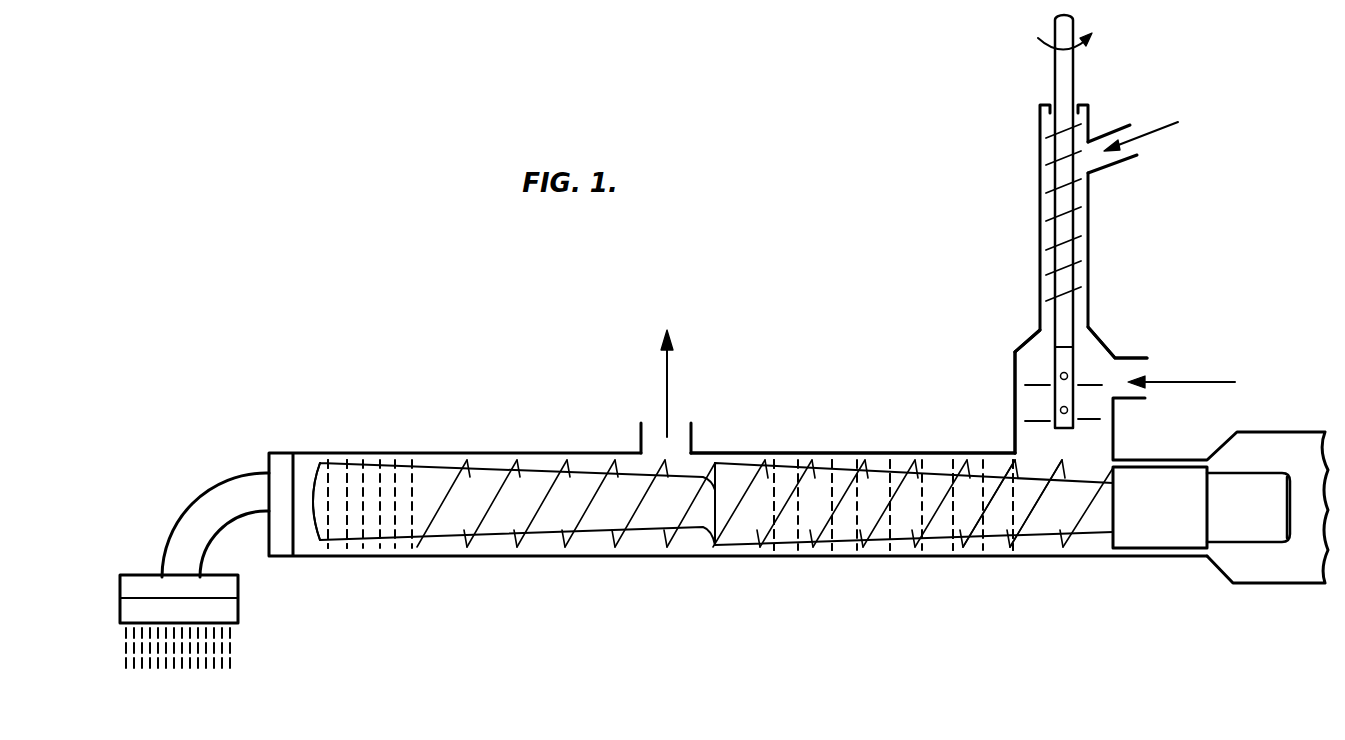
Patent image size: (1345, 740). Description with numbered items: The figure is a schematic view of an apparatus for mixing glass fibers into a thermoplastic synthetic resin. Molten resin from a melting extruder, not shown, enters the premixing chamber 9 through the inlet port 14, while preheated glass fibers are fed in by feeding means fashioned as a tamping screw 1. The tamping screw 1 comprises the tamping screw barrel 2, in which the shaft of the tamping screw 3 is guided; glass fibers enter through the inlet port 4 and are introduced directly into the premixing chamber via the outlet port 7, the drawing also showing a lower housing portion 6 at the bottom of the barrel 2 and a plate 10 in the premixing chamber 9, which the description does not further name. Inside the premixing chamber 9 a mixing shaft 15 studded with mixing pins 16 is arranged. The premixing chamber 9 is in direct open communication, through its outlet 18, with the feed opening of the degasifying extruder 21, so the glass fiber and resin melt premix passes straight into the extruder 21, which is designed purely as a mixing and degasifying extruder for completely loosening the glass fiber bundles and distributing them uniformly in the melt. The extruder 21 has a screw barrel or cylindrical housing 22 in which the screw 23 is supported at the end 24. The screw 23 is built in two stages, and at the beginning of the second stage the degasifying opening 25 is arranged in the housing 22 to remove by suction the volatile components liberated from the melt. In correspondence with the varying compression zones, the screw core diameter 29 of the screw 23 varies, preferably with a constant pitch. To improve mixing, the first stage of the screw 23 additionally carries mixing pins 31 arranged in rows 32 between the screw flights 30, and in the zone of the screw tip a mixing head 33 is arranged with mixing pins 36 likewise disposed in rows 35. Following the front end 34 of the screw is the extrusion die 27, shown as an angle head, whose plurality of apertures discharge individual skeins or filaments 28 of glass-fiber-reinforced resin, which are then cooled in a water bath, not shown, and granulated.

The tamping screw 1 is at (1083, 265).
The tamping screw barrel 2 is at (1040, 122).
The shaft of the tamping screw 3 is at (1072, 63).
The inlet port 4 is at (1103, 142).
The lower housing flange 6 is at (1080, 347).
The outlet port 7 is at (1080, 320).
The premixing chamber 9 is at (1040, 348).
The perforated plate 10 is at (1013, 386).
The inlet port 14 is at (1147, 368).
The mixing shaft 15 is at (1035, 360).
The mixing pins 16 is at (1025, 420).
The outlet 18 is at (1100, 453).
The degasifying extruder 21 is at (563, 557).
The screw barrel or cylindrical housing 22 is at (845, 452).
The screw 23 is at (737, 538).
The end of the screw 24 is at (1150, 538).
The degasifying opening 25 is at (677, 425).
The extrusion die 27 is at (273, 466).
The skeins or filaments 28 is at (237, 649).
The screw core diameter 29 is at (993, 544).
The screw flights 30 is at (640, 505).
The mixing pins 31 is at (892, 549).
The rows 32 is at (893, 505).
The mixing head 33 is at (400, 530).
The front end of the screw 34 is at (313, 468).
The rows 35 is at (345, 541).
The mixing pins 36 is at (337, 504).